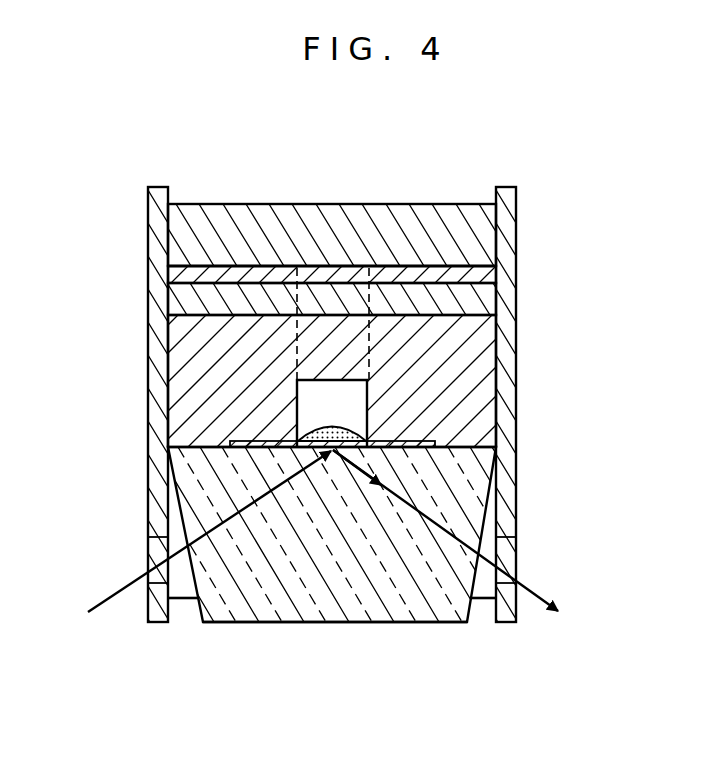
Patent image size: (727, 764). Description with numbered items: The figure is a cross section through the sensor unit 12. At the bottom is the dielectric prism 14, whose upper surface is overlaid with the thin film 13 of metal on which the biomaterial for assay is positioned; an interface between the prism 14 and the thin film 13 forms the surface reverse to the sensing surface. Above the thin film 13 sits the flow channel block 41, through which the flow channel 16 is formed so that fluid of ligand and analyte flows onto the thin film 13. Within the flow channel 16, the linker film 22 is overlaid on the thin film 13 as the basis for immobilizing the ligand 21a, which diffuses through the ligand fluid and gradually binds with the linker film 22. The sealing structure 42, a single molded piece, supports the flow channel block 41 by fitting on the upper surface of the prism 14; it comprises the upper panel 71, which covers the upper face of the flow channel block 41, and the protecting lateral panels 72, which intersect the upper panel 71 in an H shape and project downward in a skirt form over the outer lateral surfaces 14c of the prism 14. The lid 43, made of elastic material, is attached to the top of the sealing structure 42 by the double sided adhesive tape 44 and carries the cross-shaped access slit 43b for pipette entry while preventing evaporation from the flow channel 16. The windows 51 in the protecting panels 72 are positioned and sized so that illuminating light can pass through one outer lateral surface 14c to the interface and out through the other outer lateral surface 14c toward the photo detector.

The sensor unit 12 is at (489, 148).
The thin film 13 is at (252, 455).
The prism 14 is at (333, 628).
The outer lateral surface 14c is at (184, 600).
The flow channel 16 is at (360, 382).
The ligand 21a is at (385, 441).
The linker film 22 is at (305, 438).
The flow channel block 41 is at (185, 378).
The sealing structure 42 is at (358, 419).
The lid 43 is at (477, 226).
The access slit 43b is at (332, 257).
The double sided adhesive tape 44 is at (480, 274).
The windows 51 is at (151, 540).
The upper panel 71 is at (486, 300).
The protecting lateral panels 72 is at (160, 350).